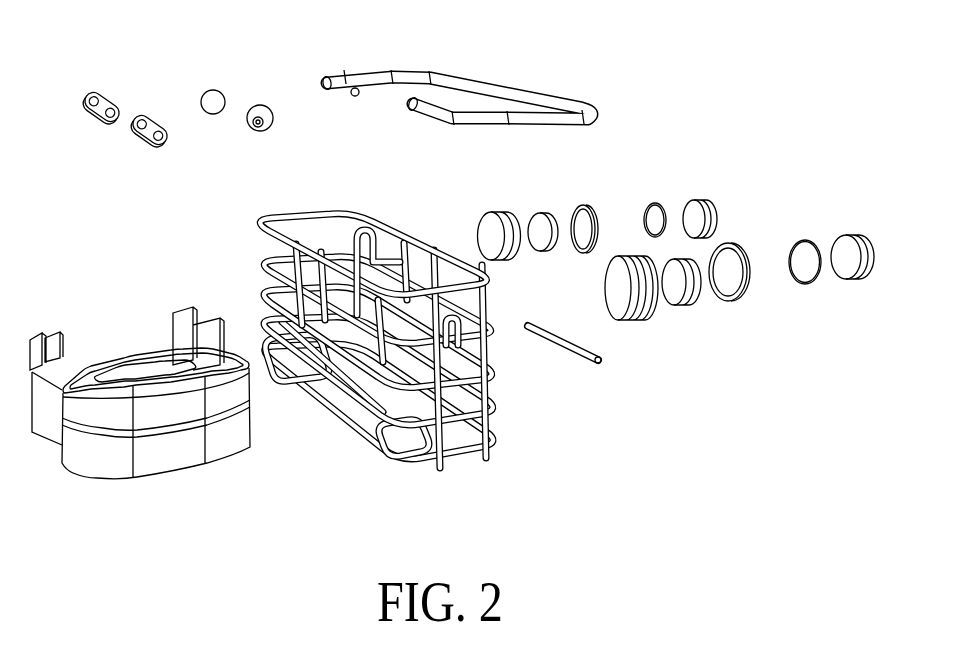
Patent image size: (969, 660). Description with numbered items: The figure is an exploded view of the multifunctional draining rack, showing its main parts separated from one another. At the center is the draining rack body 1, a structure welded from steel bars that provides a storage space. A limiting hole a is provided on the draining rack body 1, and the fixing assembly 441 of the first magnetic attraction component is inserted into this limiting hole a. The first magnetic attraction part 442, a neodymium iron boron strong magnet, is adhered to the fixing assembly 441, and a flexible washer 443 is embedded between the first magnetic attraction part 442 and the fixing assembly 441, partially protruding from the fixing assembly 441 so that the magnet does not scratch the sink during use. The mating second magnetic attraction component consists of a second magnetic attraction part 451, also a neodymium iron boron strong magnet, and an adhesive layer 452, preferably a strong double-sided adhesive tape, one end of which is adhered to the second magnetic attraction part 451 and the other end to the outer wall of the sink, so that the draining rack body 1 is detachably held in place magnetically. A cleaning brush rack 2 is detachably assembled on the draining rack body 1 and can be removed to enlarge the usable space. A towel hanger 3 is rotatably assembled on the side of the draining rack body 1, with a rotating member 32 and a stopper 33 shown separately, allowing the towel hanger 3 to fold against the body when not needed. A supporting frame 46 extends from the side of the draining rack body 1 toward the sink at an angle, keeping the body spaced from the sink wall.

The draining rack body 1 is at (376, 304).
The limiting hole a is at (353, 230).
The cleaning brush rack 2 is at (160, 447).
The towel hanger 3 is at (492, 85).
The rotating member 32 is at (160, 120).
The stopper 33 is at (262, 112).
The fixing assembly 441 is at (620, 290).
The first magnetic attraction part 442 is at (678, 287).
The flexible washer 443 is at (723, 302).
The second magnetic attraction part 451 is at (845, 262).
The adhesive layer 452 is at (803, 268).
The supporting frame 46 is at (568, 353).